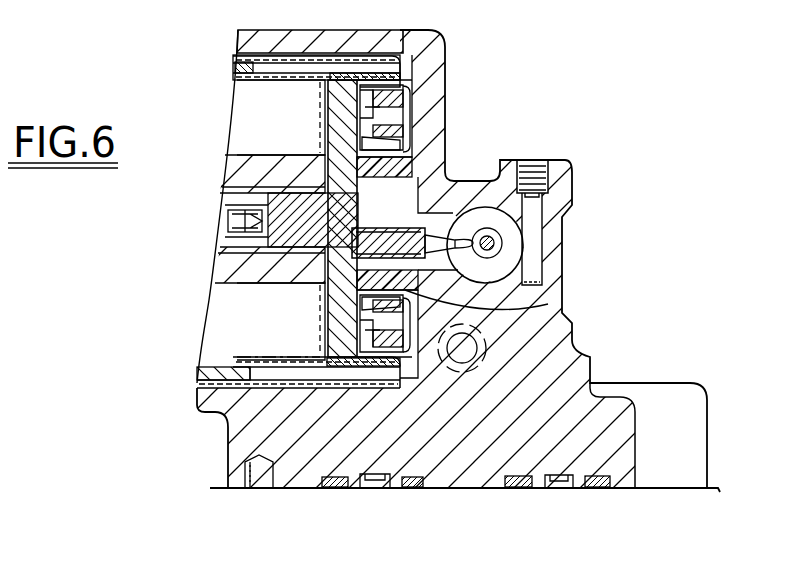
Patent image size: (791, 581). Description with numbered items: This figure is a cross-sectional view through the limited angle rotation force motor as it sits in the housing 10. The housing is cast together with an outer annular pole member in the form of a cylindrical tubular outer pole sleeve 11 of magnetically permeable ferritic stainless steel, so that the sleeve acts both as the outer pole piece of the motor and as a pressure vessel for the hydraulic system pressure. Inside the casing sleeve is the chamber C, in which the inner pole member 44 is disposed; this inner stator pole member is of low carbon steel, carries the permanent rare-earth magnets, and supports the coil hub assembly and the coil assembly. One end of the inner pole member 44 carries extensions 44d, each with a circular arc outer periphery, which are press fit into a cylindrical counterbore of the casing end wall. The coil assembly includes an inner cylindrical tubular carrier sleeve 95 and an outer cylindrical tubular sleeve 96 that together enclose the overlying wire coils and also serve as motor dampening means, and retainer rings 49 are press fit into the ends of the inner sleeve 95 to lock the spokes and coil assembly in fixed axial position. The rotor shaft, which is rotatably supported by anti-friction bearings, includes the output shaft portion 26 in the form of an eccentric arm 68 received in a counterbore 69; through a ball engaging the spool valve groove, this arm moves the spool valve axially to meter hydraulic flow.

The housing 10 is at (440, 80).
The outer pole sleeve 11 is at (275, 30).
The retainer rings 49 is at (376, 75).
The chamber C is at (451, 49).
The inner pole member 44 is at (234, 266).
The extensions 44d is at (447, 126).
The output shaft portion 26 is at (420, 218).
The eccentric arm 68 is at (456, 190).
The counterbore 69 is at (330, 292).
The inner carrier sleeve 95 is at (197, 365).
The outer sleeve 96 is at (197, 388).